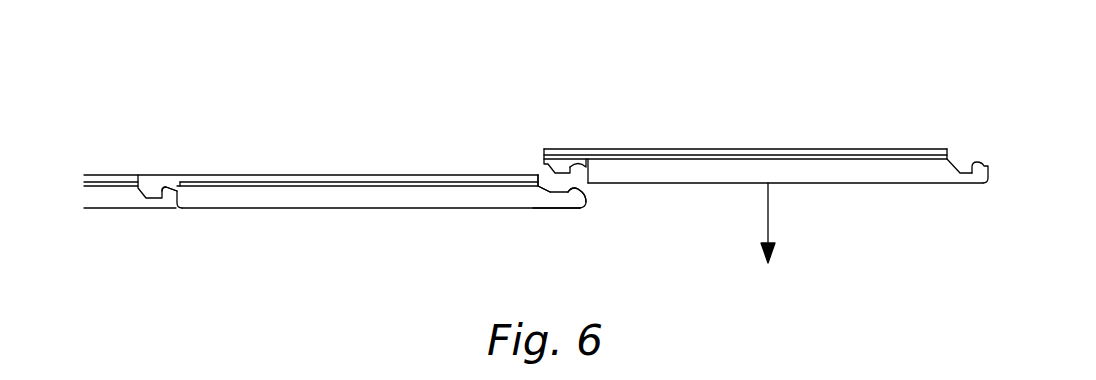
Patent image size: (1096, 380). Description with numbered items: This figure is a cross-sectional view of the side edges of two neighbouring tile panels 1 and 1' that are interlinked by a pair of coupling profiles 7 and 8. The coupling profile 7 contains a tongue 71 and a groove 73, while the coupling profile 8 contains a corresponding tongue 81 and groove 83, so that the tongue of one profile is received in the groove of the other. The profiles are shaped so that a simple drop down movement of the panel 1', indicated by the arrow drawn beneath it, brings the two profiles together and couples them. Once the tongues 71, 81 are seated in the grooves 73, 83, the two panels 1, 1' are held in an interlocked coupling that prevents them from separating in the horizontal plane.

The tile panel 1 is at (332, 143).
The tile panel 1' is at (763, 151).
The coupling profile 7 is at (170, 208).
The coupling profile 8 is at (155, 190).
The tongue 71 is at (580, 193).
The groove 73 is at (533, 208).
The tongue 81 is at (538, 184).
The groove 83 is at (577, 160).